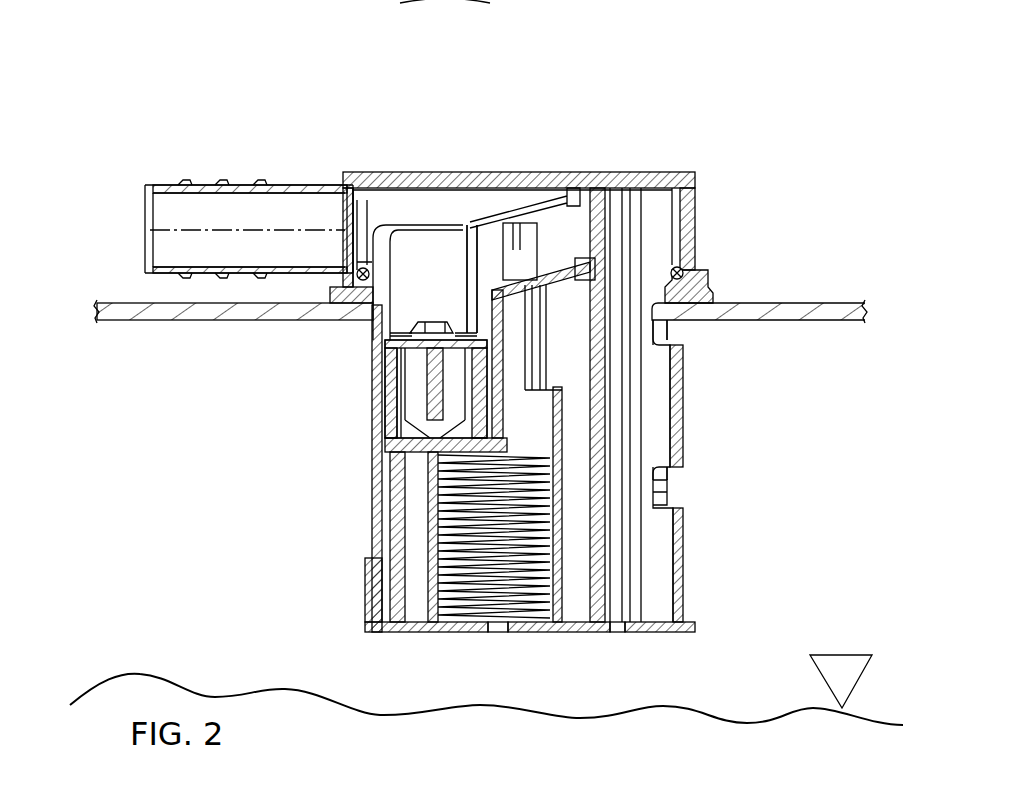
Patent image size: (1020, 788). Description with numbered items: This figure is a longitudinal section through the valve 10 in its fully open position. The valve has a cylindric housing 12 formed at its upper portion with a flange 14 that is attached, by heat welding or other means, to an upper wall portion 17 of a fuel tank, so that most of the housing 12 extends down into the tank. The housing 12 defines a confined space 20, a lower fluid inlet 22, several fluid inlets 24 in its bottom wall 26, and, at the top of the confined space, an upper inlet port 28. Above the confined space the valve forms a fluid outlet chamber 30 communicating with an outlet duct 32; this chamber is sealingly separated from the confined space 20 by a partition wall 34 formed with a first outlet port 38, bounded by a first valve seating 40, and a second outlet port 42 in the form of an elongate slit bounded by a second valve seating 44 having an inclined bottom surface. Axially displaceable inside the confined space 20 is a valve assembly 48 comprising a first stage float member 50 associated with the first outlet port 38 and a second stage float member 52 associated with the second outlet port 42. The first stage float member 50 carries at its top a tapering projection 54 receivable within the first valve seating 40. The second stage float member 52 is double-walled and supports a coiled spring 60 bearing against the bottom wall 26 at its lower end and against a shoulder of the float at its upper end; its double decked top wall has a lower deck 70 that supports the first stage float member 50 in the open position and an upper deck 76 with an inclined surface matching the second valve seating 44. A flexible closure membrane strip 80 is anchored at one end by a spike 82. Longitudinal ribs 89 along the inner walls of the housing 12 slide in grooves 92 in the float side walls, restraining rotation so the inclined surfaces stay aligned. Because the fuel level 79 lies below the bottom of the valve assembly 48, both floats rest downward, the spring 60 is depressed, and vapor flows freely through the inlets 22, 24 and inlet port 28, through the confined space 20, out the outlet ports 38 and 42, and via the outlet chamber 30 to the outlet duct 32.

The valve 10 is at (177, 97).
The housing 12 is at (683, 365).
The flange 14 is at (713, 293).
The upper wall portion 17 is at (858, 300).
The confined space 20 is at (640, 390).
The lower fluid inlet 22 is at (667, 488).
The fluid inlets 24 is at (497, 627).
The bottom wall 26 is at (422, 624).
The upper inlet port 28 is at (655, 334).
The fluid outlet chamber 30 is at (376, 172).
The outlet duct 32 is at (178, 213).
The partition wall 34 is at (483, 232).
The first outlet port 38 is at (432, 173).
The first valve seating 40 is at (447, 298).
The second outlet port 42 is at (580, 196).
The second valve seating 44 is at (550, 263).
The valve assembly 48 is at (200, 193).
The first stage float member 50 is at (400, 405).
The second stage float member 52 is at (598, 437).
The tapering projection 54 is at (362, 335).
The coiled spring 60 is at (498, 552).
The lower deck 70 is at (432, 400).
The upper deck 76 is at (493, 290).
The fuel level 79 is at (838, 655).
The flexible closure membrane strip 80 is at (690, 199).
The spike 82 is at (683, 240).
The longitudinal ribs 89 is at (522, 173).
The grooves 92 is at (400, 428).